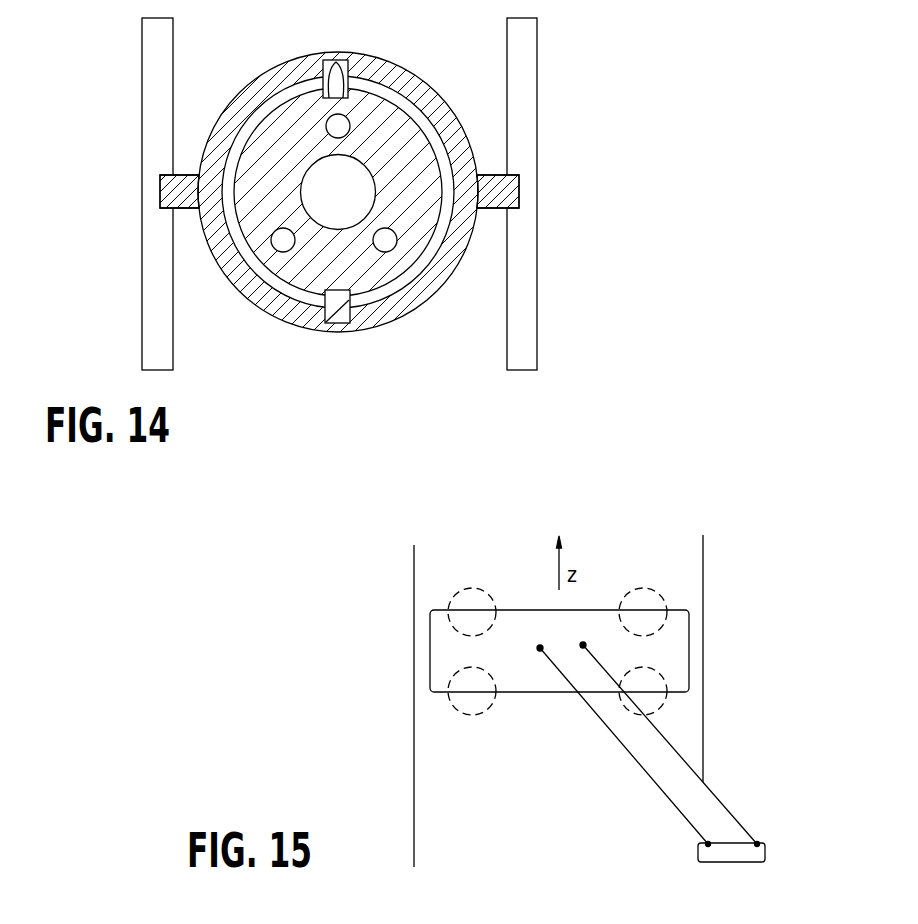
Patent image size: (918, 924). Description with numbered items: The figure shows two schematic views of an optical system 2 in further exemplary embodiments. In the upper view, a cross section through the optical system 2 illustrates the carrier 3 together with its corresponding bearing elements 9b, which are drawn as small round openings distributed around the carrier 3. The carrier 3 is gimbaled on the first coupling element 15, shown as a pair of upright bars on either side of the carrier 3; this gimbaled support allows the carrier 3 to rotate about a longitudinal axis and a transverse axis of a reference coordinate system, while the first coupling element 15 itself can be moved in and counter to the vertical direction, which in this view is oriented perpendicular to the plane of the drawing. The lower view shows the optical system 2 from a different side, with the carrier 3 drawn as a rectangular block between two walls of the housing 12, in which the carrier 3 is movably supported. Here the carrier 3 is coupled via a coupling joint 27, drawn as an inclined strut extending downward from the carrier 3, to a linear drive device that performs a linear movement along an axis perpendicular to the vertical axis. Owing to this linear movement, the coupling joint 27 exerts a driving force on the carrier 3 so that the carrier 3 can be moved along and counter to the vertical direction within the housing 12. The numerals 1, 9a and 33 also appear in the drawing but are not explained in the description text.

In FIG. 14, the bearing housing 1 is at (357, 207).
In FIG. 14, the optical system 2 is at (115, 313).
In FIG. 15, the optical system 2 is at (382, 750).
In FIG. 14, the carrier 3 is at (397, 143).
In FIG. 15, the carrier 3 is at (675, 638).
In FIG. 15, the holes 9a is at (470, 707).
In FIG. 14, the bearing elements 9b is at (336, 123).
In FIG. 15, the bearing elements 9b is at (467, 602).
In FIG. 15, the housing 12 is at (413, 643).
In FIG. 14, the first coupling element 15 is at (152, 143).
In FIG. 15, the coupling joint 27 is at (717, 795).
In FIG. 15, the foot plate 33 is at (765, 860).